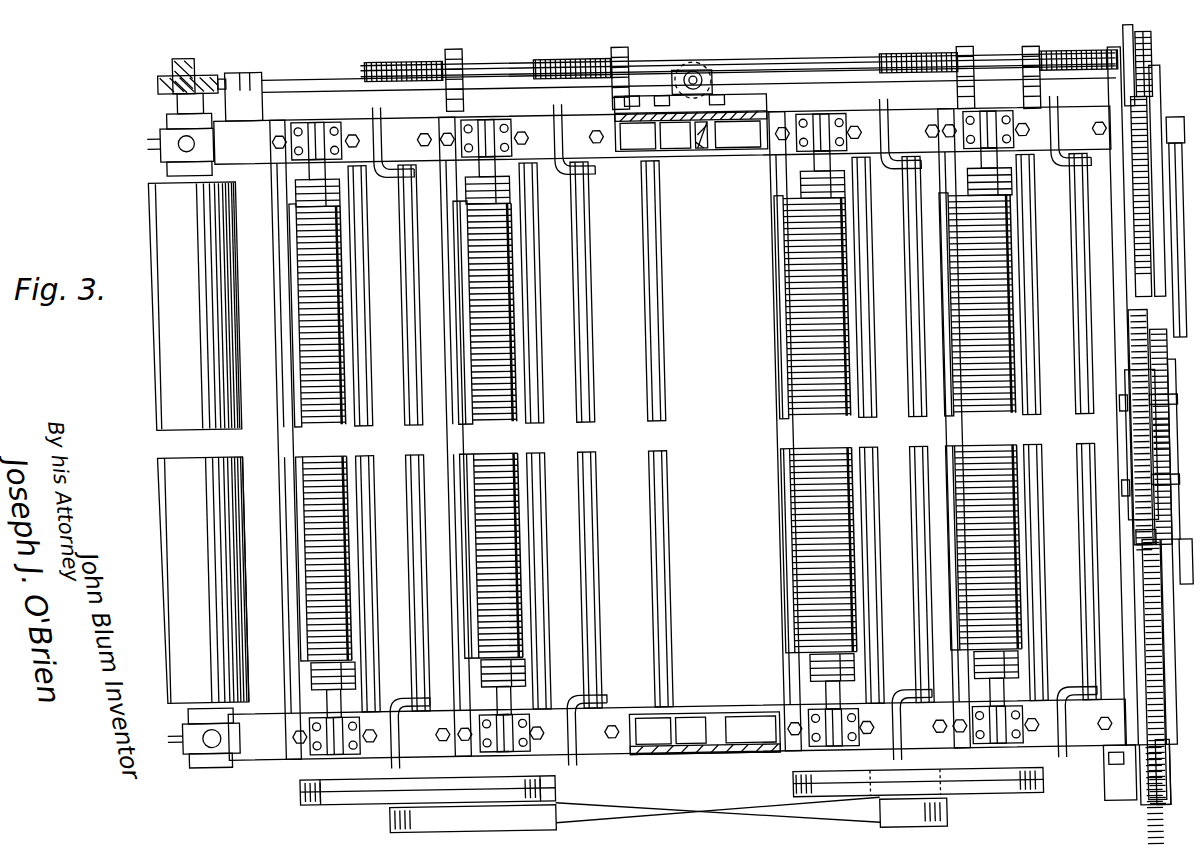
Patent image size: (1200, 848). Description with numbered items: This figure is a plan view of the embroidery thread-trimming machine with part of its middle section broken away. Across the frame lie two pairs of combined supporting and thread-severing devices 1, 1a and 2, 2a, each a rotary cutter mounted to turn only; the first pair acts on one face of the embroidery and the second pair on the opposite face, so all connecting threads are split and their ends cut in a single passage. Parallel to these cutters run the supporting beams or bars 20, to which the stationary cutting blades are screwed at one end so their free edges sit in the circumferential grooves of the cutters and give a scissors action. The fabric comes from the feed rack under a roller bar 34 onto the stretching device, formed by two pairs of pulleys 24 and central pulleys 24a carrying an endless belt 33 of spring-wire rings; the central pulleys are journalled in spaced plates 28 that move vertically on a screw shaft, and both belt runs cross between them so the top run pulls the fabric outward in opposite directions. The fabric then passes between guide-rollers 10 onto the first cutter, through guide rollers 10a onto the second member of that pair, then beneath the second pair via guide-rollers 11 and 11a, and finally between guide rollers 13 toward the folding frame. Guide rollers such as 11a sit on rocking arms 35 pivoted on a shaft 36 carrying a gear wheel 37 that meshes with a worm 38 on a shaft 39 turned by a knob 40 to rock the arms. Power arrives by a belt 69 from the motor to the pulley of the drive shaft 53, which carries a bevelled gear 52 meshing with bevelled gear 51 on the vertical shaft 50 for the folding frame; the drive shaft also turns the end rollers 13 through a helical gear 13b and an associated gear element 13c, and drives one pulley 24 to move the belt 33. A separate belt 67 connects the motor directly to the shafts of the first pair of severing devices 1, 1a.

The combined supporting and thread-severing device 1 is at (1015, 429).
The combined supporting and thread-severing device 1a is at (850, 429).
The combined supporting and thread-severing device 2 is at (515, 430).
The combined supporting and thread-severing device 2a is at (335, 420).
The guide-rollers 10 is at (1035, 224).
The guide rollers 10a is at (866, 266).
The guide-rollers 11 is at (538, 241).
The guide rollers 11a is at (364, 267).
The guide rollers 13 is at (177, 549).
The helical gear 13b is at (182, 53).
The roller worm gear 13c is at (167, 80).
The supporting beams or bars 20 is at (291, 119).
The pulleys 24 is at (1136, 498).
The central pulleys 24a is at (1136, 396).
The spaced plates 28 is at (1133, 513).
The endless belt 33 is at (1141, 243).
The roller bar 34 is at (1181, 199).
The rocking arms 35 is at (1152, 766).
The shaft 36 is at (411, 373).
The gear wheel 37 is at (465, 58).
The worm 38 is at (430, 48).
The shaft 39 is at (850, 69).
The knob 40 is at (1158, 61).
The vertical shaft 50 is at (710, 73).
The bevelled gear 51 is at (722, 79).
The bevelled gear 52 is at (705, 133).
The drive shaft 53 is at (774, 92).
The belt 67 is at (1026, 797).
The belt 69 is at (710, 809).